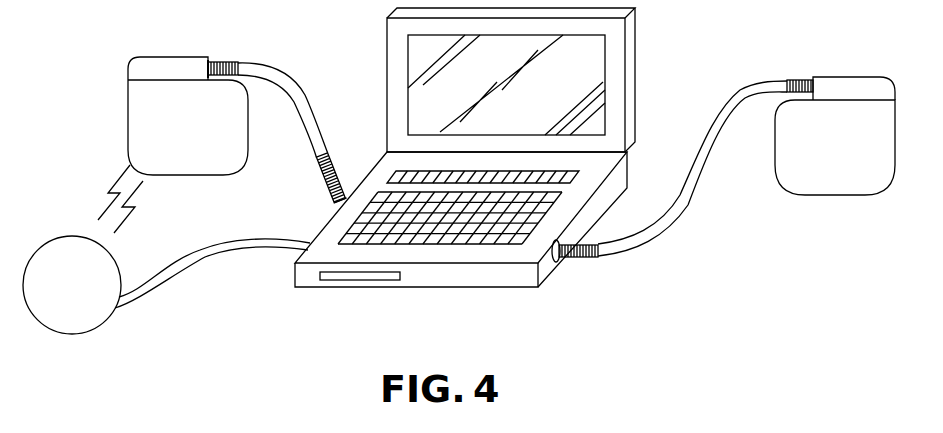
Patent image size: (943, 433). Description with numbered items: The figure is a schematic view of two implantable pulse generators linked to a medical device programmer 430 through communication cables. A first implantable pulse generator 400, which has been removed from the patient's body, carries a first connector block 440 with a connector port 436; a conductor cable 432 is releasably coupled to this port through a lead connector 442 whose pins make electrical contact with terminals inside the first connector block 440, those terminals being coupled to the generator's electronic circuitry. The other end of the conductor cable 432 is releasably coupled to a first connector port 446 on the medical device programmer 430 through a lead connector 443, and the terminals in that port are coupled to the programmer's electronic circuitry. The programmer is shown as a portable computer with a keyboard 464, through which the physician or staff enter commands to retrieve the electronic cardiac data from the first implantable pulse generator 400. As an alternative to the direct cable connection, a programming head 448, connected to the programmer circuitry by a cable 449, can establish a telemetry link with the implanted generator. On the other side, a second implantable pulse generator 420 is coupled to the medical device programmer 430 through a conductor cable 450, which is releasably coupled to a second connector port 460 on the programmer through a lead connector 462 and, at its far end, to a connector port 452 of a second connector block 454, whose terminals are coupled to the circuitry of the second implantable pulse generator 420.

The first implantable pulse generator 400 is at (199, 137).
The first connector block 440 is at (140, 62).
The connector port 436 is at (210, 57).
The lead connector 442 is at (234, 62).
The conductor cable 432 is at (300, 85).
The first connector port 446 is at (344, 196).
The lead connector 443 is at (333, 199).
The programming head 448 is at (90, 294).
The cable 449 is at (155, 300).
The medical device programmer 430 is at (314, 289).
The keyboard 464 is at (435, 232).
The second connector port 460 is at (553, 262).
The lead connector 462 is at (570, 262).
The conductor cable 450 is at (737, 92).
The connector port 452 is at (797, 79).
The second connector block 454 is at (866, 77).
The second implantable pulse generator 420 is at (857, 156).